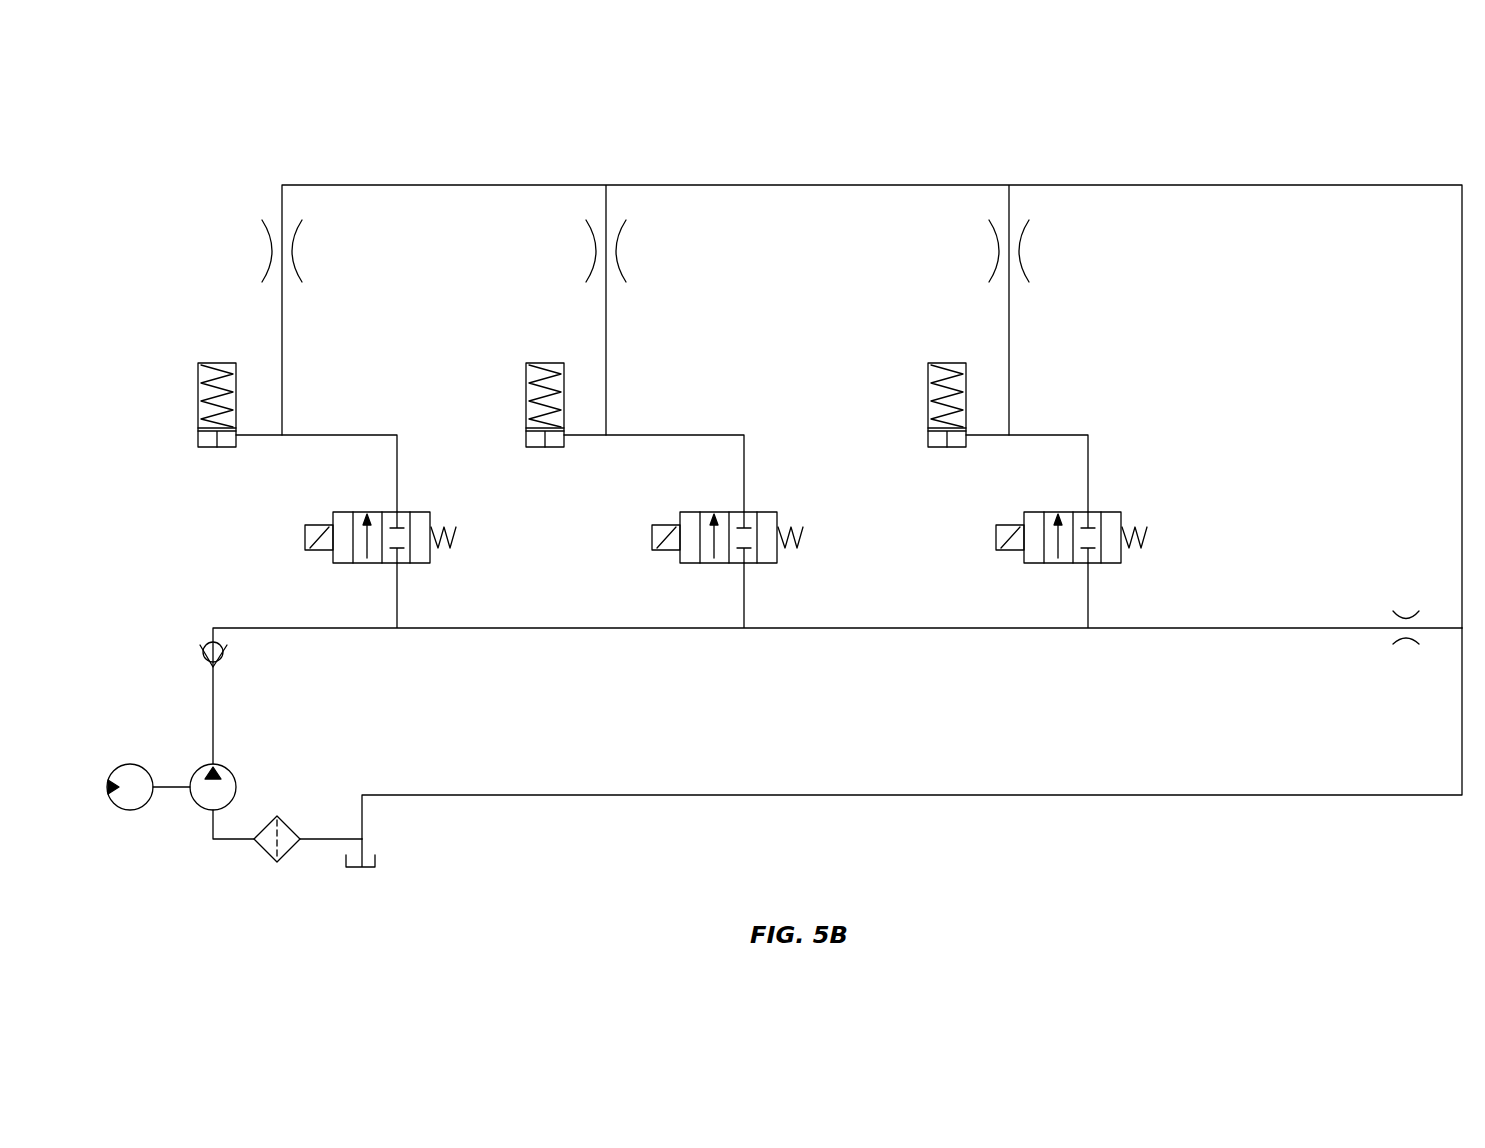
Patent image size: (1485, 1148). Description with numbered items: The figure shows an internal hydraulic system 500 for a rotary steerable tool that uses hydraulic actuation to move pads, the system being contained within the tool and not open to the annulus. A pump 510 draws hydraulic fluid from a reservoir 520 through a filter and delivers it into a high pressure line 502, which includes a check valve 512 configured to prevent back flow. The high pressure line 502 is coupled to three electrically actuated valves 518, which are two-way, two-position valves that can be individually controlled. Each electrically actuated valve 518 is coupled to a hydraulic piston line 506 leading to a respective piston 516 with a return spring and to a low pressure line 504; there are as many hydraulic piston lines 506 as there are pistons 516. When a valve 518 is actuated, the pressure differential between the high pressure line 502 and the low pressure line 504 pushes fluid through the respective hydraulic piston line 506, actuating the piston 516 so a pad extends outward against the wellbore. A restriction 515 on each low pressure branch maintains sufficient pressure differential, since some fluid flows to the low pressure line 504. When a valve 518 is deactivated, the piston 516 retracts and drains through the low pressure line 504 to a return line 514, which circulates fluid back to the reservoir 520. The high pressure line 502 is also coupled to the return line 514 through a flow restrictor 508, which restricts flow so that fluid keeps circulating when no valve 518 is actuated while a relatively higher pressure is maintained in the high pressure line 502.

The internal hydraulic system 500 is at (1356, 115).
The high pressure line 502 is at (484, 630).
The low pressure line 504 is at (705, 183).
The hydraulic piston line 506 is at (303, 434).
The flow restrictor 508 is at (1400, 612).
The pump 510 is at (195, 800).
The check valve 512 is at (207, 640).
The return line 514 is at (1162, 796).
The restriction 515 is at (268, 266).
The piston 516 is at (198, 415).
The electrically actuated valve 518 is at (425, 511).
The reservoir 520 is at (369, 862).